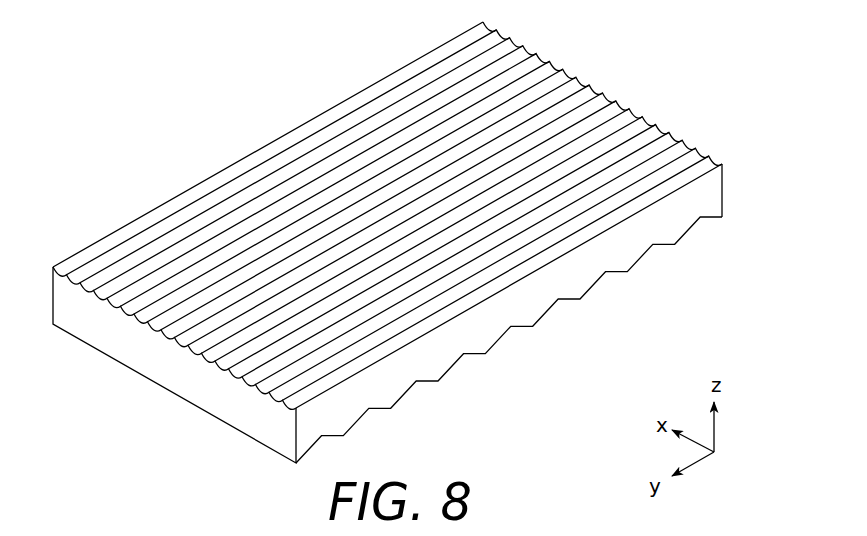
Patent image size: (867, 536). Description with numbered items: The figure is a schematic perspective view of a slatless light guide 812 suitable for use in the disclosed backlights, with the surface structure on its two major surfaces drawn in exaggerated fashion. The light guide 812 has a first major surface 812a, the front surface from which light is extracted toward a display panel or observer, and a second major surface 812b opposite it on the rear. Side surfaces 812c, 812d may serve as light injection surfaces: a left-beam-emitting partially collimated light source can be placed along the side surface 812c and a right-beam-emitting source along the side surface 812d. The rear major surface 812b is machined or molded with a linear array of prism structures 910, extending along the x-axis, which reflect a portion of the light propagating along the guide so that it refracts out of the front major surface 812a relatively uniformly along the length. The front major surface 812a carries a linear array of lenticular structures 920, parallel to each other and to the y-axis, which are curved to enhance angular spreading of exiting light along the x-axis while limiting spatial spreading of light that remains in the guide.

The slatless light guide 812 is at (168, 99).
The first major surface 812a is at (655, 147).
The second major surface 812b is at (458, 374).
The side surface 812c is at (175, 370).
The side surface 812d is at (603, 78).
The prism structures 910 is at (546, 333).
The lenticular structures 920 is at (163, 258).